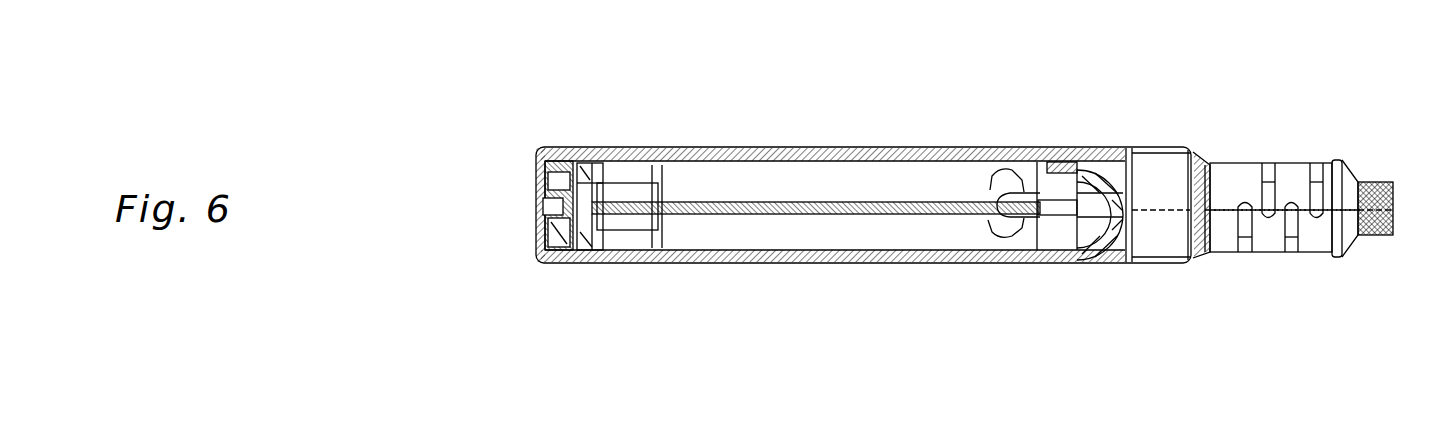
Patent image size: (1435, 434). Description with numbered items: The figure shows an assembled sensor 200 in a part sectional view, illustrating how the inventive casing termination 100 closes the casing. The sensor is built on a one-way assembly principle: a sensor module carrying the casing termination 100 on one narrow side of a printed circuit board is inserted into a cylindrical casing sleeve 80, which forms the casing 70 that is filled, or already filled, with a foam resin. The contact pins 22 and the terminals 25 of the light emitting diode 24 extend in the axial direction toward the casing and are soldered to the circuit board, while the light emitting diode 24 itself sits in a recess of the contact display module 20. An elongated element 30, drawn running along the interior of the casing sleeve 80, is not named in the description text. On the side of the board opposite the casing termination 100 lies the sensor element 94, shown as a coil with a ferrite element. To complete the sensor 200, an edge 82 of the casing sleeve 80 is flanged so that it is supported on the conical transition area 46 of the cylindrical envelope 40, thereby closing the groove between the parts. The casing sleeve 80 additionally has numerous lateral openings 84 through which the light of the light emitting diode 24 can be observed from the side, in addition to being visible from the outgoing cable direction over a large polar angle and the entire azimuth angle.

The sensor 200 is at (602, 100).
The casing termination 100 is at (1307, 100).
The casing sleeve 80 is at (866, 147).
The edge 82 is at (1200, 160).
The lateral openings 84 is at (1104, 150).
The sensor element 94 is at (552, 230).
The casing 70 is at (808, 282).
The plunger rod 30 is at (768, 210).
The contact pins 22 is at (975, 138).
The terminals 25 is at (995, 139).
The light emitting diode 24 is at (1097, 177).
The contact display module 20 is at (1060, 225).
The conical transition area 46 is at (1193, 262).
The envelope 40 is at (1267, 243).